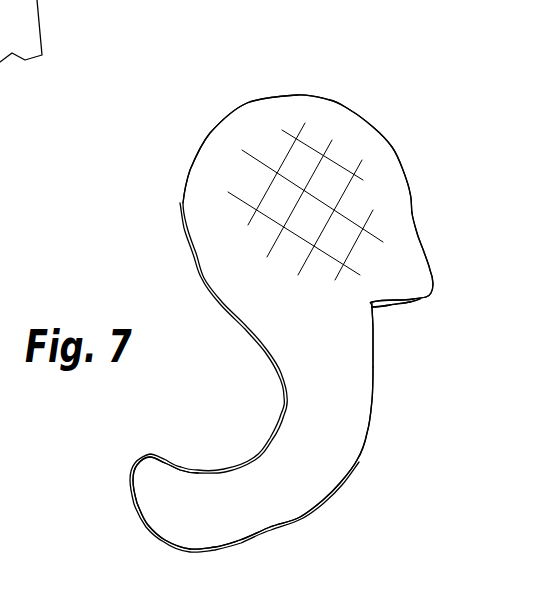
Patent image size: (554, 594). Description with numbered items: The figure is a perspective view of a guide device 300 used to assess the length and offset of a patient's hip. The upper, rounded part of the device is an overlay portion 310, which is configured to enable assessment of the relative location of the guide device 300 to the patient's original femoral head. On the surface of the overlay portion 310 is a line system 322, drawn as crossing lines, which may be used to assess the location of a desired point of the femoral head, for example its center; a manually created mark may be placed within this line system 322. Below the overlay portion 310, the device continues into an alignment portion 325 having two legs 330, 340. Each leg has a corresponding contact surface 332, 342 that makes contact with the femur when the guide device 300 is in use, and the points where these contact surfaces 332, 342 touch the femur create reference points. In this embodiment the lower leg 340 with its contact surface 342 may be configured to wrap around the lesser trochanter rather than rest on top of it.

The guide device 300 is at (281, 285).
The overlay portion 310 is at (324, 137).
The line system 322 is at (231, 201).
The alignment portion 325 is at (427, 280).
The leg 330 is at (473, 255).
The contact surface 332 is at (445, 312).
The leg 340 is at (317, 458).
The contact surface 342 is at (171, 460).